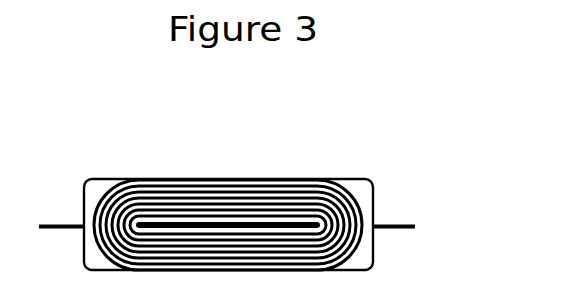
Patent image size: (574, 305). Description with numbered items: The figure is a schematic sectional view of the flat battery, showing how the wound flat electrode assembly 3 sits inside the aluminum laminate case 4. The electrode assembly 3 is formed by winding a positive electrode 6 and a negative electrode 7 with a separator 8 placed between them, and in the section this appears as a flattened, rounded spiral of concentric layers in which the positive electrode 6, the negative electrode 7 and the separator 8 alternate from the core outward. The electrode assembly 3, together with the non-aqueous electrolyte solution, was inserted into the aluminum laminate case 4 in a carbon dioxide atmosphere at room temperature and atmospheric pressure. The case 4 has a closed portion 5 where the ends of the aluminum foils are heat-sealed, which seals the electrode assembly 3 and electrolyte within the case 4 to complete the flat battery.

The electrode assembly 3 is at (189, 209).
The aluminum laminate case 4 is at (102, 172).
The closed portion 5 is at (402, 212).
The positive electrode 6 is at (283, 186).
The negative electrode 7 is at (339, 182).
The separator 8 is at (367, 208).